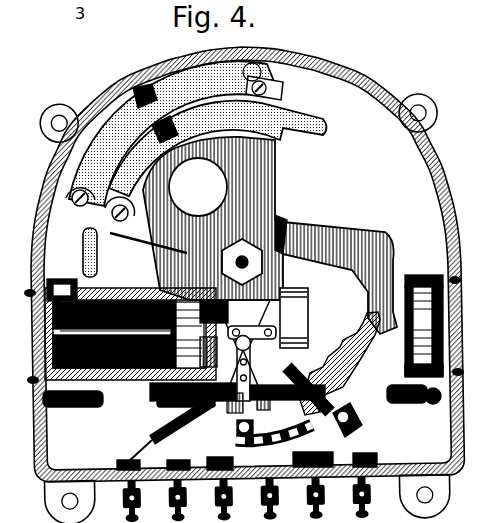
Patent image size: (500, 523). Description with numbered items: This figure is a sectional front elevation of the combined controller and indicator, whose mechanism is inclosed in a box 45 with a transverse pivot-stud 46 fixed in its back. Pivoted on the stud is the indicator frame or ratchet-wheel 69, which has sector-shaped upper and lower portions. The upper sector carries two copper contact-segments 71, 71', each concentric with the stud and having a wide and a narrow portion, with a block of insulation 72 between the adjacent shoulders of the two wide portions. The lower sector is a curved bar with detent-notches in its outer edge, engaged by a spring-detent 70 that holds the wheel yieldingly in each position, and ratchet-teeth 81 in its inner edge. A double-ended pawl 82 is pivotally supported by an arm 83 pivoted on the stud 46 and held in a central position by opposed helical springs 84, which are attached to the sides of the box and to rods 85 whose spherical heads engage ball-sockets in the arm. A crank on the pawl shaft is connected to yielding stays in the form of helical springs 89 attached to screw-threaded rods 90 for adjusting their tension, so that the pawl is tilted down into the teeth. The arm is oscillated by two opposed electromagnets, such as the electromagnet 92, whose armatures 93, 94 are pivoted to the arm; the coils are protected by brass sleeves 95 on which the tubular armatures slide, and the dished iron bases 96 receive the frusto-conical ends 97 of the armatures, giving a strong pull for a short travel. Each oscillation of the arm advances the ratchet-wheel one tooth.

The box 45 is at (45, 191).
The pivot-stud 46 is at (236, 262).
The ratchet-wheel 69 is at (333, 234).
The spring-detent 70 is at (238, 442).
The outer contact-segment 71 is at (174, 169).
The inner contact-segment 71' is at (225, 177).
The block of insulation 72 is at (130, 100).
The ratchet-teeth 81 is at (352, 322).
The double-ended pawl 82 is at (172, 389).
The arm 83 is at (262, 283).
The helical springs 84 is at (170, 399).
The rods 85 is at (226, 410).
The helical springs 89 is at (160, 427).
The screw-threaded rods 90 is at (148, 454).
The electromagnet 92 is at (47, 321).
The armature 93 is at (298, 306).
The armature 94 is at (131, 292).
The brass sleeves 95 is at (104, 292).
The iron bases 96 is at (66, 286).
The frusto-conical ends 97 is at (90, 405).